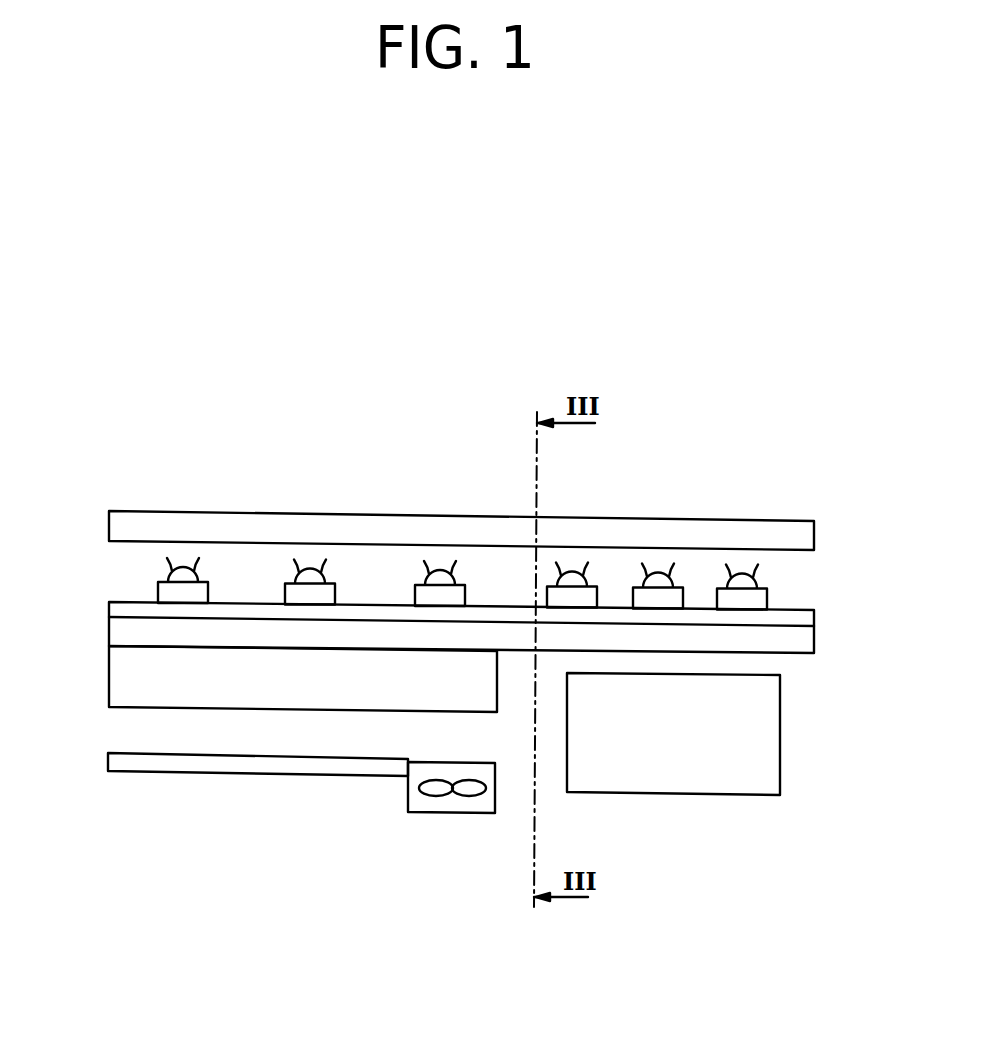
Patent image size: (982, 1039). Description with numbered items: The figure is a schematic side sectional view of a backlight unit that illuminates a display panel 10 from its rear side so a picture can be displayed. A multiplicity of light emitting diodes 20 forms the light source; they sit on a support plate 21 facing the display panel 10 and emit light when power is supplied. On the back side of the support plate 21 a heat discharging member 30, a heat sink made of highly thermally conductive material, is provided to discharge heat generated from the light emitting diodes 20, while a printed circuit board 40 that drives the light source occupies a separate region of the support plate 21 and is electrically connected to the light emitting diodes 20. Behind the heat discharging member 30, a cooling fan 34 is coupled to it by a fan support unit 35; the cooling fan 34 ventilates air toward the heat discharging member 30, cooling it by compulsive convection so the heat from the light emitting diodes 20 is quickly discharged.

The display panel 10 is at (815, 533).
The light emitting diodes 20 is at (158, 592).
The support plate 21 is at (815, 640).
The heat discharging member 30 is at (108, 677).
The cooling fan 34 is at (465, 812).
The fan support unit 35 is at (108, 762).
The printed circuit board 40 is at (774, 741).